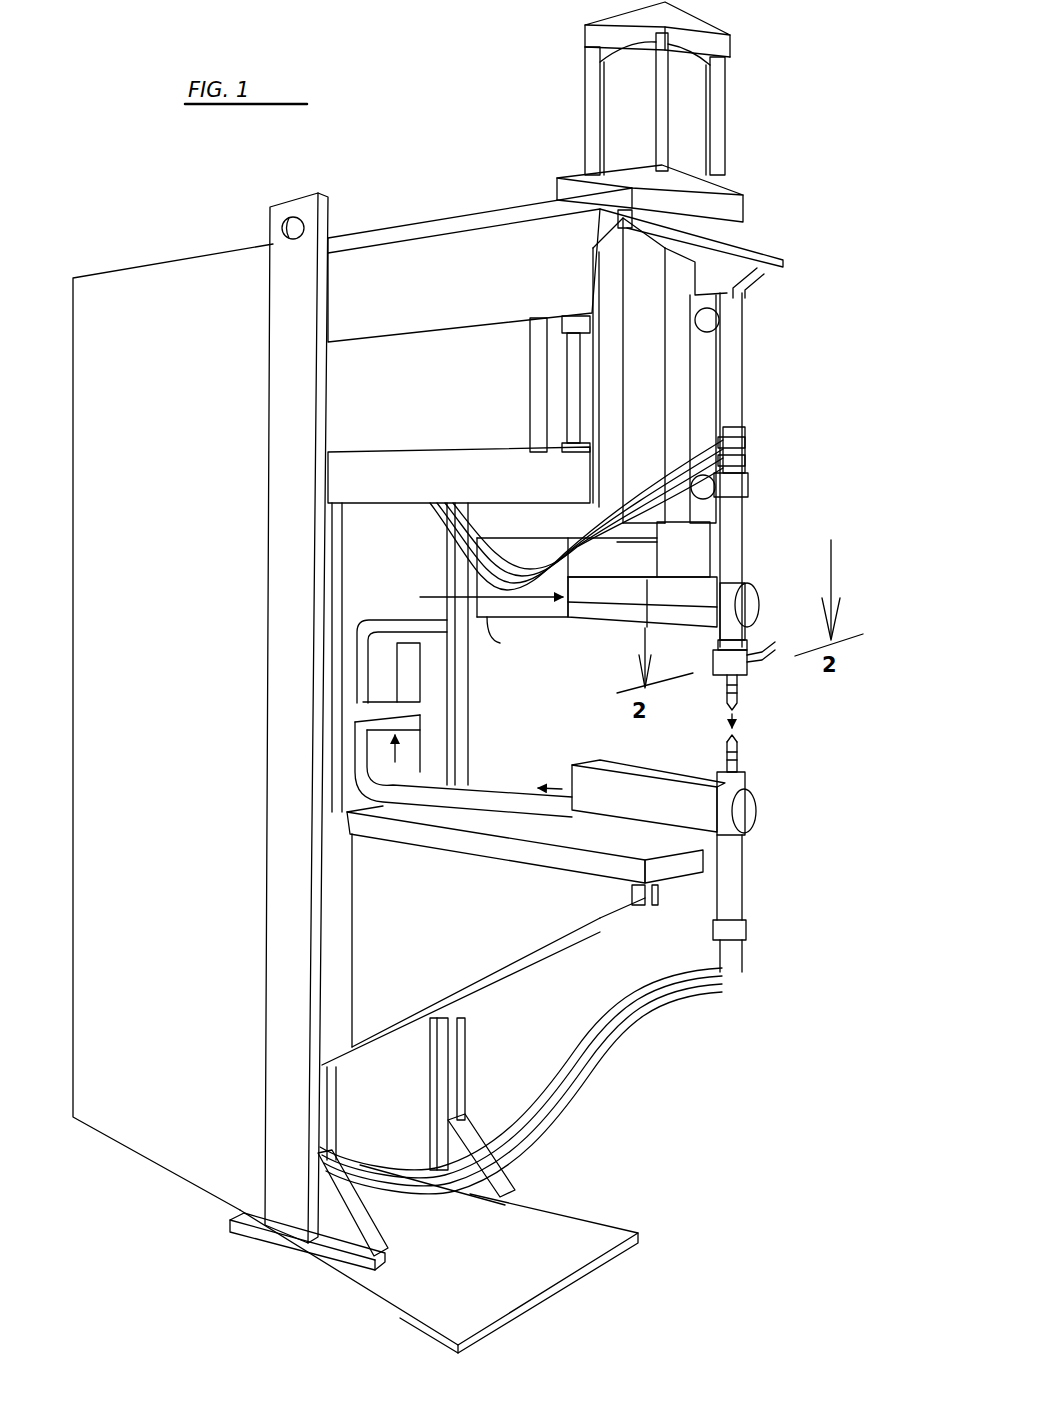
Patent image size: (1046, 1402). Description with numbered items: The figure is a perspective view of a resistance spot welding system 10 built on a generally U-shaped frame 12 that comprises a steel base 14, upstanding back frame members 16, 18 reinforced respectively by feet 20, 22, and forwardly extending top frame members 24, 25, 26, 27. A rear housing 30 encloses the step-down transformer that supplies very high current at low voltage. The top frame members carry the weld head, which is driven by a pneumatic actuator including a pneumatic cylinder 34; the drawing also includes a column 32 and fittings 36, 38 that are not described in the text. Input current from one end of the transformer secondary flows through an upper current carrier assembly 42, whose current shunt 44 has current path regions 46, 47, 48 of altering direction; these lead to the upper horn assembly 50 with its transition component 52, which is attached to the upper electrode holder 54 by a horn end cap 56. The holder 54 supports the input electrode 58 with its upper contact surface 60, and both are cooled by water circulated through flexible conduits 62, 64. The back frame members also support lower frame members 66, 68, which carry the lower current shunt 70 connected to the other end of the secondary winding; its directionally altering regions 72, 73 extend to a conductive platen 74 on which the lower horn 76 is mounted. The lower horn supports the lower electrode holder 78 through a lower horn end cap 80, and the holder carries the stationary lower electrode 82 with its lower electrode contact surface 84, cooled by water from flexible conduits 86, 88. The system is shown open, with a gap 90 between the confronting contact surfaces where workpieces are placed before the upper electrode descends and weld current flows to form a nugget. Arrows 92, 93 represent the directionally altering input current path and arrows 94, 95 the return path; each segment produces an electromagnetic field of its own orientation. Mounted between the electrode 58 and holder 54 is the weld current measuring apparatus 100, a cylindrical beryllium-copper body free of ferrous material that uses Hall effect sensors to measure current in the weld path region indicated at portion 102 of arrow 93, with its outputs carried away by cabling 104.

The resistance welding system 10 is at (848, 90).
The frame 12 is at (207, 1211).
The base 14 is at (578, 1213).
The back frame member 16 is at (285, 1083).
The back frame member 18 is at (466, 1064).
The foot 20 is at (352, 1242).
The foot 22 is at (508, 1176).
The top frame member 24 is at (492, 244).
The top frame member 25 is at (745, 285).
The top frame member 26 is at (380, 462).
The top frame member 27 is at (567, 440).
The rear housing 30 is at (172, 265).
The slide column 32 is at (683, 380).
The pneumatic cylinder 34 is at (697, 120).
The clamp 36 is at (714, 487).
The knob 38 is at (713, 320).
The upper current carrier assembly 42 is at (478, 670).
The current shunt 44 is at (490, 652).
The current path region 46 is at (410, 683).
The current path region 47 is at (425, 618).
The current path region 48 is at (458, 577).
The upper horn assembly 50 is at (618, 613).
The transition component 52 is at (524, 608).
The upper electrode holder 54 is at (740, 527).
The horn end cap 56 is at (750, 598).
The input electrode 58 is at (738, 692).
The upper contact surface 60 is at (738, 712).
The flexible conduit 62 is at (700, 432).
The flexible conduit 64 is at (600, 548).
The lower frame member 66 is at (405, 1005).
The lower frame member 68 is at (568, 948).
The lower current shunt 70 is at (530, 757).
The current path region 72 is at (420, 733).
The current path region 73 is at (467, 814).
The platen 74 is at (672, 850).
The lower horn 76 is at (615, 777).
The lower electrode holder 78 is at (738, 878).
The lower horn end cap 80 is at (752, 810).
The lower electrode 82 is at (740, 756).
The lower electrode contact surface 84 is at (740, 738).
The flexible conduit 86 is at (623, 1030).
The flexible conduit 88 is at (610, 1017).
The gap 90 is at (722, 722).
The arrow 92 is at (482, 628).
The arrow 93 is at (680, 612).
The arrow 94 is at (668, 805).
The arrow 95 is at (474, 773).
The weld current measuring apparatus 100 is at (750, 652).
The portion 102 is at (713, 654).
The cabling 104 is at (770, 650).